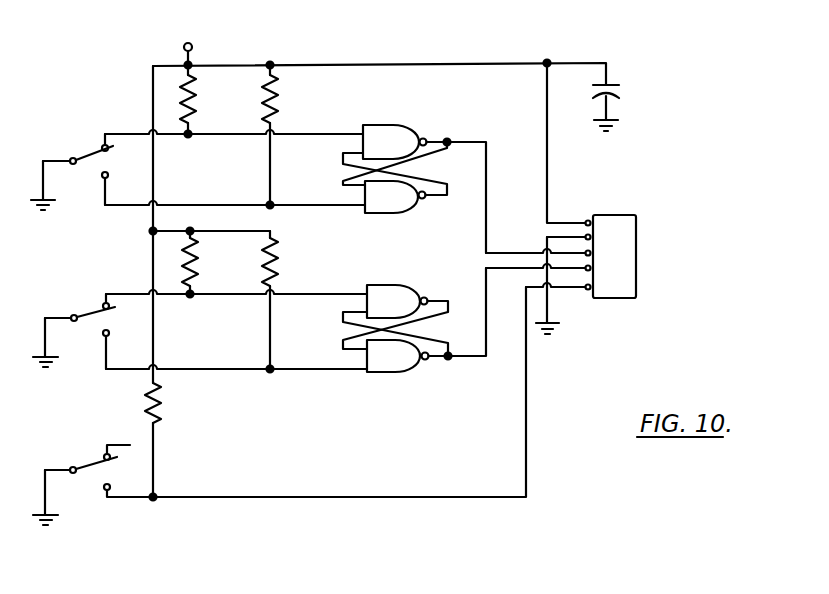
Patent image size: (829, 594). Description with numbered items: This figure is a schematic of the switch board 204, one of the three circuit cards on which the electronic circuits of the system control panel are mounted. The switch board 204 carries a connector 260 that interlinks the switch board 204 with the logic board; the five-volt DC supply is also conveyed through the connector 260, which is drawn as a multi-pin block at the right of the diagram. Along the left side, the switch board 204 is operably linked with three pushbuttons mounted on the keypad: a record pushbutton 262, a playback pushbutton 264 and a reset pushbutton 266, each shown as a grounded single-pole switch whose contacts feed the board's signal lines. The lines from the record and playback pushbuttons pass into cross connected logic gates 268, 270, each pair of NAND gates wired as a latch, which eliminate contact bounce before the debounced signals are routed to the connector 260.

The switch board 204 is at (365, 50).
The connector 260 is at (637, 254).
The record pushbutton 262 is at (90, 147).
The playback pushbutton 264 is at (90, 306).
The reset pushbutton 266 is at (88, 463).
The cross connected logic gate 268 is at (378, 215).
The cross connected logic gate 270 is at (377, 375).